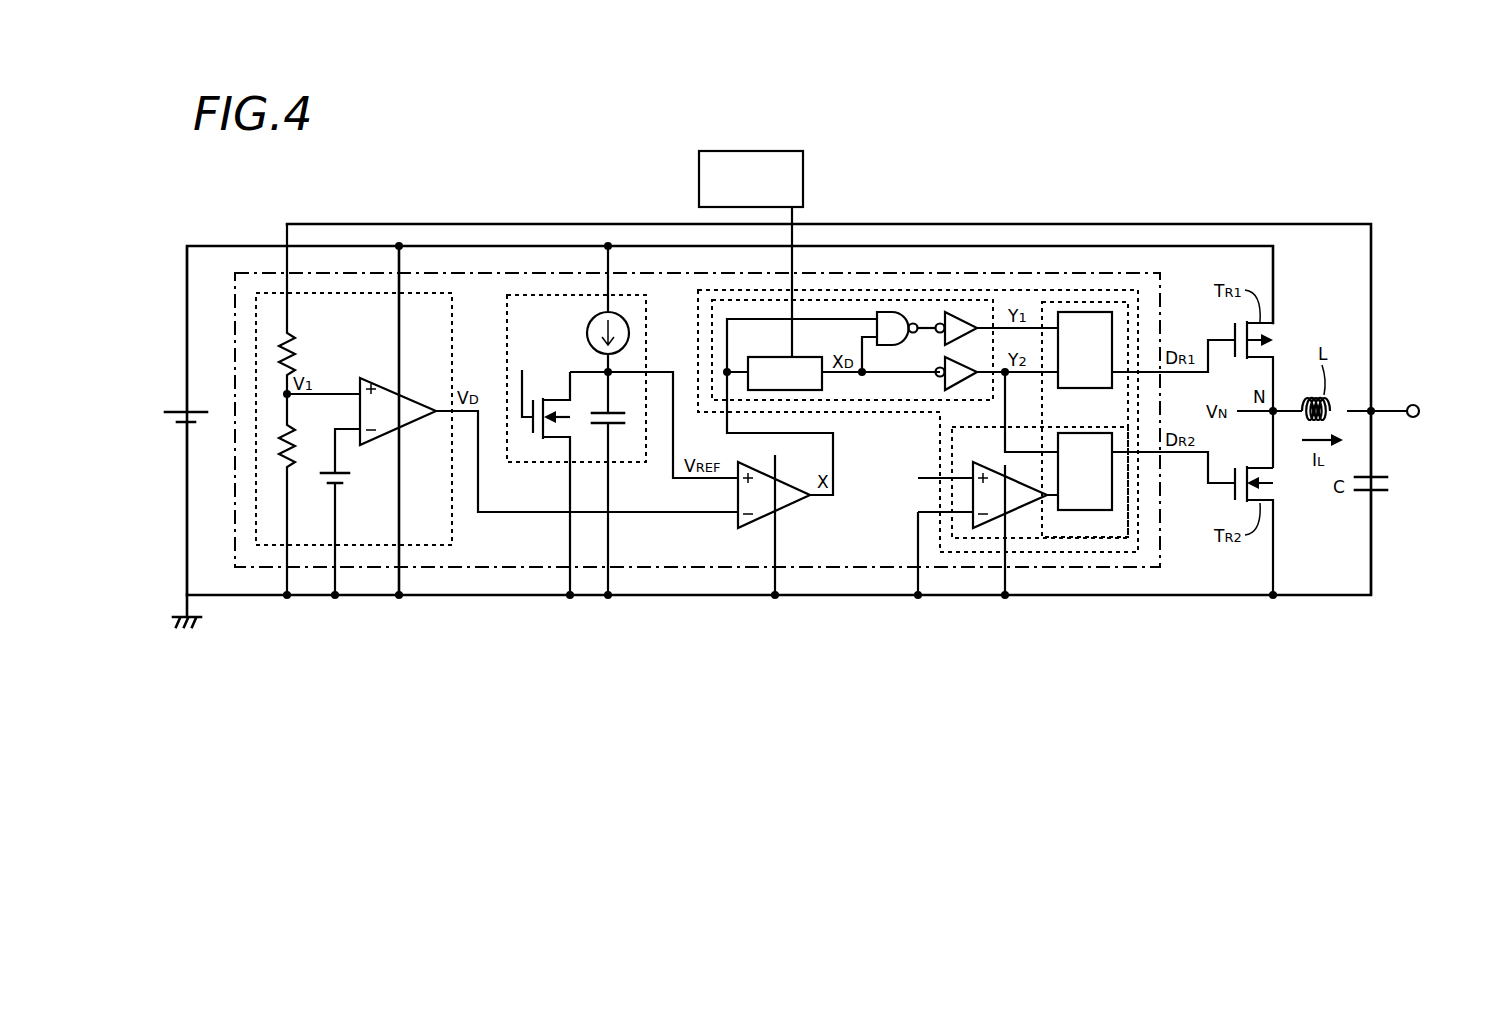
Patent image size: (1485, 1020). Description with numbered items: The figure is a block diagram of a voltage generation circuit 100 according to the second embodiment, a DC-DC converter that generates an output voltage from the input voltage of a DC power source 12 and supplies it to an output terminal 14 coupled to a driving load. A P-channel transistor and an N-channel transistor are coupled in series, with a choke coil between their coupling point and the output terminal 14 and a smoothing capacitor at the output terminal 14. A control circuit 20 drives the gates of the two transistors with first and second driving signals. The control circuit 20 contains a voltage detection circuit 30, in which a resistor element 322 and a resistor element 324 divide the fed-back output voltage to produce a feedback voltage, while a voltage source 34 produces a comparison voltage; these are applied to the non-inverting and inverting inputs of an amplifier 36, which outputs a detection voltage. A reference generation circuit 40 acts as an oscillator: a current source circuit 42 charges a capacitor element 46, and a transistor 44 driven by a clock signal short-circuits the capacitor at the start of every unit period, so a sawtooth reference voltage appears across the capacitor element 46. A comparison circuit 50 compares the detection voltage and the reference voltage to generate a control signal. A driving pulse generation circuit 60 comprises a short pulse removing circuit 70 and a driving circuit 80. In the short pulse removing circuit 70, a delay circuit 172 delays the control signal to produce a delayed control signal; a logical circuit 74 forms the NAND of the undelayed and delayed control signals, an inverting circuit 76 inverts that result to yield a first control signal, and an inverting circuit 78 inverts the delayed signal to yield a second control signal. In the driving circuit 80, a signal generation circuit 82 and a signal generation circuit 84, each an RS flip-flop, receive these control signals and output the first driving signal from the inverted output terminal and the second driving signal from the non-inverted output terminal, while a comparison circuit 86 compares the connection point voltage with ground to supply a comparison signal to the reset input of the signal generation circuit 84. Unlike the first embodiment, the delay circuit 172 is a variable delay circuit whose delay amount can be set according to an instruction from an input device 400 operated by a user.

The voltage generation circuit 100 is at (282, 201).
The DC power source 12 is at (193, 425).
The output terminal 14 is at (1413, 404).
The control circuit 20 is at (860, 567).
The voltage detection circuit 30 is at (438, 293).
The resistor element 322 is at (297, 438).
The resistor element 324 is at (298, 348).
The voltage source 34 is at (340, 486).
The amplifier 36 is at (426, 437).
The reference generation circuit 40 is at (570, 295).
The current source circuit 42 is at (587, 336).
The transistor 44 is at (553, 445).
The capacitor element 46 is at (619, 445).
The comparison circuit 50 is at (796, 506).
The driving pulse generation circuit 60 is at (1110, 538).
The short pulse removing circuit 70 is at (816, 290).
The delay circuit 172 is at (778, 355).
The logical circuit 74 is at (875, 330).
The inverting circuit 76 is at (950, 343).
The inverting circuit 78 is at (944, 383).
The driving circuit 80 is at (1112, 302).
The signal generation circuit 82 is at (1112, 323).
The signal generation circuit 84 is at (1112, 497).
The comparison circuit 86 is at (975, 470).
The input device 400 is at (736, 150).